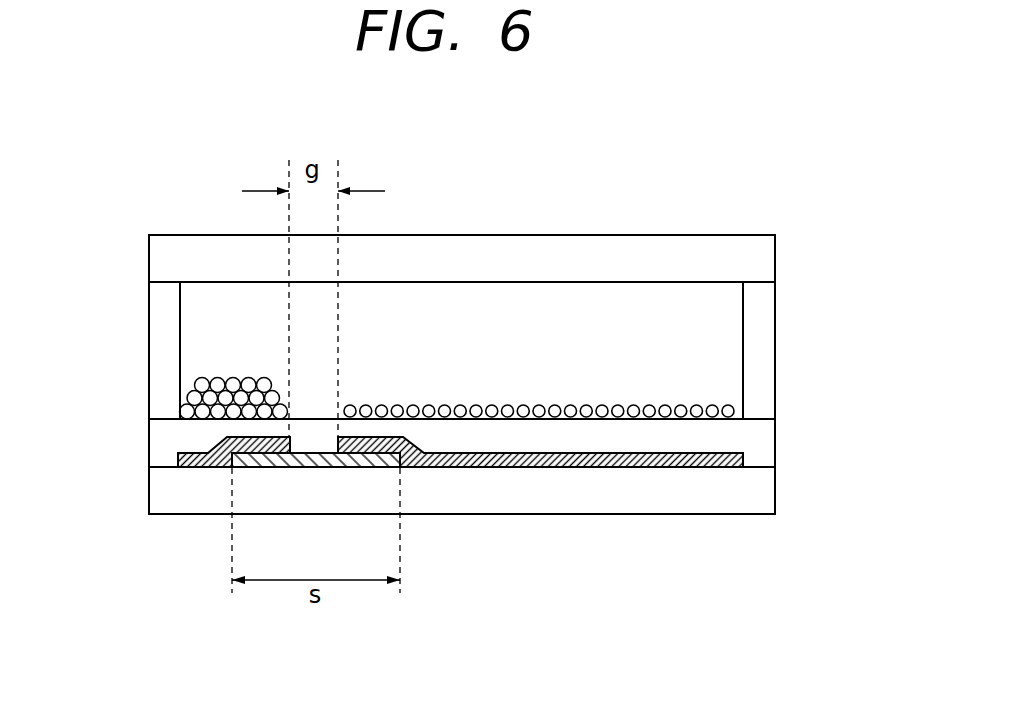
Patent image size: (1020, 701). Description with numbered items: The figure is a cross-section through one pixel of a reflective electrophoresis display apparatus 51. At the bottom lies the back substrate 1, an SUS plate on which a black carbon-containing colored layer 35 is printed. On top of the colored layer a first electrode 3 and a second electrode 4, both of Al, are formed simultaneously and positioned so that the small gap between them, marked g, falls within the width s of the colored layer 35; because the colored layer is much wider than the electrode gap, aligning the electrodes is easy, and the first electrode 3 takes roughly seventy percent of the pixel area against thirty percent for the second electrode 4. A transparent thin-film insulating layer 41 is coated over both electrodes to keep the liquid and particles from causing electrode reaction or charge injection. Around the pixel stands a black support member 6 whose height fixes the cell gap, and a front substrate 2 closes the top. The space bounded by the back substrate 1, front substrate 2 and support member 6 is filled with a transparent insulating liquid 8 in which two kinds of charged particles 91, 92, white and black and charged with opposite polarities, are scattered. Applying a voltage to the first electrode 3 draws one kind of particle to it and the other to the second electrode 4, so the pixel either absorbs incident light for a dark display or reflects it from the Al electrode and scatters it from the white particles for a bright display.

The electrophoresis display apparatus 51 is at (651, 166).
The insulating liquid 8 is at (491, 297).
The front substrate 2 is at (760, 263).
The support member 6 is at (763, 335).
The insulating layer 41 is at (737, 437).
The back substrate 1 is at (741, 500).
The colored layer 35 is at (280, 463).
The second electrode 4 is at (178, 457).
The first electrode 3 is at (745, 453).
The spacer particles 91 is at (200, 385).
The particles / getter 92 is at (587, 410).